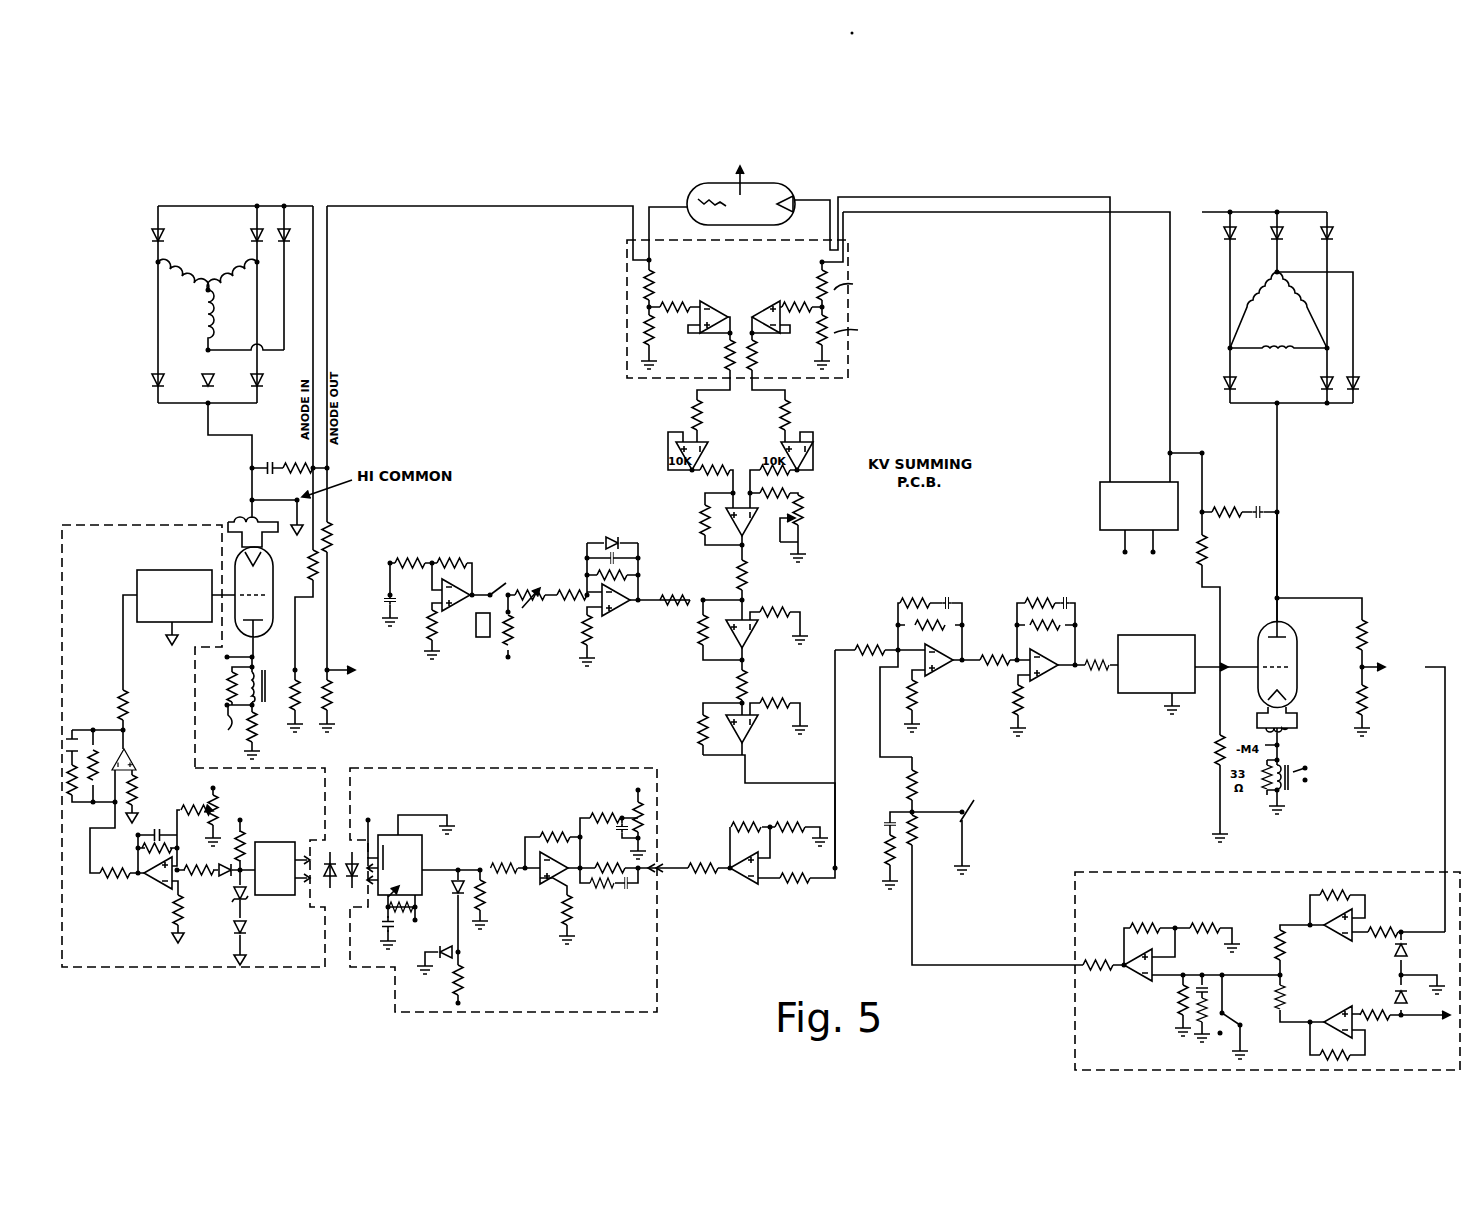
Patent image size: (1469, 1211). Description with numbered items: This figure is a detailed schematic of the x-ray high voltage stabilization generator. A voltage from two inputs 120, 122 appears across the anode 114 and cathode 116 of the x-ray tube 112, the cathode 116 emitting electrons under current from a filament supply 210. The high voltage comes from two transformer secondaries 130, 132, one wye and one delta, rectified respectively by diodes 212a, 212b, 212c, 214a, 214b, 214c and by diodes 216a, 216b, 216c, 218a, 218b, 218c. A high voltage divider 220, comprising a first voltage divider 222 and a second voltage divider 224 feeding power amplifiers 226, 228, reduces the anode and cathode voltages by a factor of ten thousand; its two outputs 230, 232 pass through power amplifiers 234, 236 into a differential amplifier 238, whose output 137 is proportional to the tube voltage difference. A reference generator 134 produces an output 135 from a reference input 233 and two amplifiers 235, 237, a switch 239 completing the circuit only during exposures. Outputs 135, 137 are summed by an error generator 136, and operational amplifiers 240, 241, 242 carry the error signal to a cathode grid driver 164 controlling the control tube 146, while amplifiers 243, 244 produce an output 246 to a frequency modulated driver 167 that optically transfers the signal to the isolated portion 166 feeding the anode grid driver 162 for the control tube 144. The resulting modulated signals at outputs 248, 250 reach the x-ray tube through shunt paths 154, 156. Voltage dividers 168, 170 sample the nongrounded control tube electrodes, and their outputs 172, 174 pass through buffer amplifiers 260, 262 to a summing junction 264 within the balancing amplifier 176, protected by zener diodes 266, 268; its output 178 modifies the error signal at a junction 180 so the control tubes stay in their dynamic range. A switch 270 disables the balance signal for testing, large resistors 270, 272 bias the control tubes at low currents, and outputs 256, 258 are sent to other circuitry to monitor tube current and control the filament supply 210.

The x-ray tube 112 is at (760, 185).
The anode 114 is at (726, 205).
The cathode 116 is at (812, 192).
The input 120 is at (455, 200).
The input 122 is at (972, 214).
The secondary transformer 130 is at (146, 302).
The secondary transformer 132 is at (1318, 397).
The reference generator 134 is at (522, 648).
The output 135 is at (623, 601).
The summing or error generator 136 is at (746, 640).
The output 137 is at (744, 594).
The control tube 144 is at (273, 592).
The control tube 146 is at (1262, 630).
The shunt path 154 is at (283, 452).
The shunt path 156 is at (1244, 480).
The anode grid driver 162 is at (165, 570).
The cathode grid driver 164 is at (1140, 695).
The isolated portion of the circuit 166 is at (188, 968).
The frequency modulated driver 167 is at (432, 866).
The voltage divider 168 is at (303, 600).
The voltage divider 170 is at (1378, 612).
The output 172 is at (300, 676).
The output 174 is at (1445, 765).
The summing or balancing amplifier 176 is at (1267, 950).
The output 178 is at (978, 968).
The junction 180 is at (890, 657).
The filament supply 210 is at (1100, 506).
The diode 212a is at (150, 235).
The diode 212b is at (250, 235).
The diode 212c is at (292, 235).
The diode 214a is at (152, 383).
The diode 214b is at (203, 385).
The diode 214c is at (253, 380).
The diode 216a is at (1238, 238).
The diode 216b is at (1280, 224).
The diode 216c is at (1336, 236).
The diode 218a is at (1238, 385).
The diode 218b is at (1322, 390).
The diode 218c is at (1362, 385).
The high voltage divider 220 is at (731, 320).
The first voltage divider 222 is at (660, 332).
The second voltage divider 224 is at (812, 332).
The power amplifier 226 is at (713, 306).
The power amplifier 228 is at (767, 306).
The output 230 is at (697, 392).
The output 232 is at (785, 392).
The reference input 233 is at (386, 598).
The power amplifier 234 is at (702, 455).
The amplifier 235 is at (512, 580).
The power amplifier 236 is at (781, 430).
The amplifier 237 is at (620, 612).
The differential amplifier 238 is at (746, 525).
The switch 239 is at (556, 584).
The operational amplifier 240 is at (746, 735).
The operational amplifier 241 is at (935, 673).
The operational amplifier 242 is at (1050, 680).
The amplifier 243 is at (745, 884).
The amplifier 244 is at (538, 882).
The output 246 is at (506, 890).
The output 248 is at (252, 478).
The output 250 is at (1281, 560).
The output 256 is at (228, 722).
The output 258 is at (330, 668).
The buffer amplifier 260 is at (1322, 919).
The buffer amplifier 262 is at (1340, 1012).
The summing junction 264 is at (1284, 977).
The zener diode 266 is at (1396, 994).
The zener diode 268 is at (1408, 950).
The switch 270 is at (333, 520).
The resistor 272 is at (1200, 572).